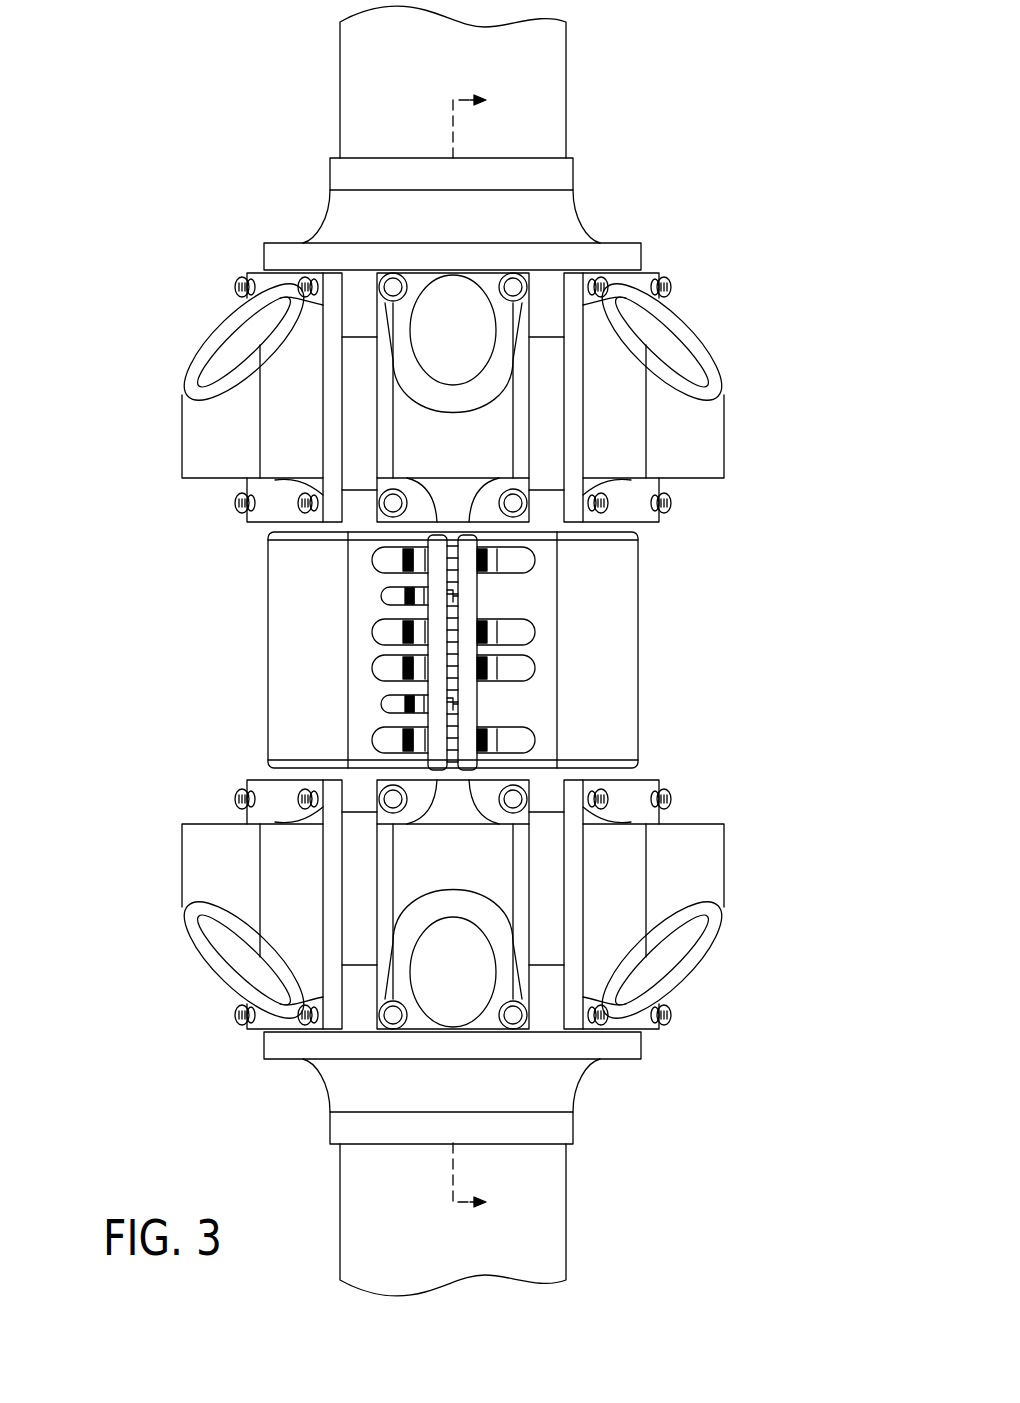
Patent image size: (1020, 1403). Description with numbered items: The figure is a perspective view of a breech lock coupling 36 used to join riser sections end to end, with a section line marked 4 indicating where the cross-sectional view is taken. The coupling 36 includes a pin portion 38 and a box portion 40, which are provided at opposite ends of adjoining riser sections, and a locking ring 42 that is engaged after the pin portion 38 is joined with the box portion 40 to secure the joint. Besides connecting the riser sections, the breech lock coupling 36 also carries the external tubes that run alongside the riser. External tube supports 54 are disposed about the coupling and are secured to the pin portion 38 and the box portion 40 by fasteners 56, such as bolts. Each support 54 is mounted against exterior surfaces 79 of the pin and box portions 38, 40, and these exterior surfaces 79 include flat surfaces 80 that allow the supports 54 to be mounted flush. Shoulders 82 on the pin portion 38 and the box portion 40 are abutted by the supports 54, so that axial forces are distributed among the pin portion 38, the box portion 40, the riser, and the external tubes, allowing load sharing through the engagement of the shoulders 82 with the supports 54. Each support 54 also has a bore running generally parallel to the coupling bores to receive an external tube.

The breech lock coupling 36 is at (176, 88).
The pin portion 38 is at (589, 1077).
The box portion 40 is at (611, 245).
The locking ring 42 is at (640, 690).
The support 54 is at (185, 437).
The fasteners 56 is at (660, 500).
The exterior surfaces 79 is at (357, 373).
The flat surfaces 80 is at (377, 455).
The shoulders 82 is at (641, 253).
The section line 4- 4 is at (469, 651).